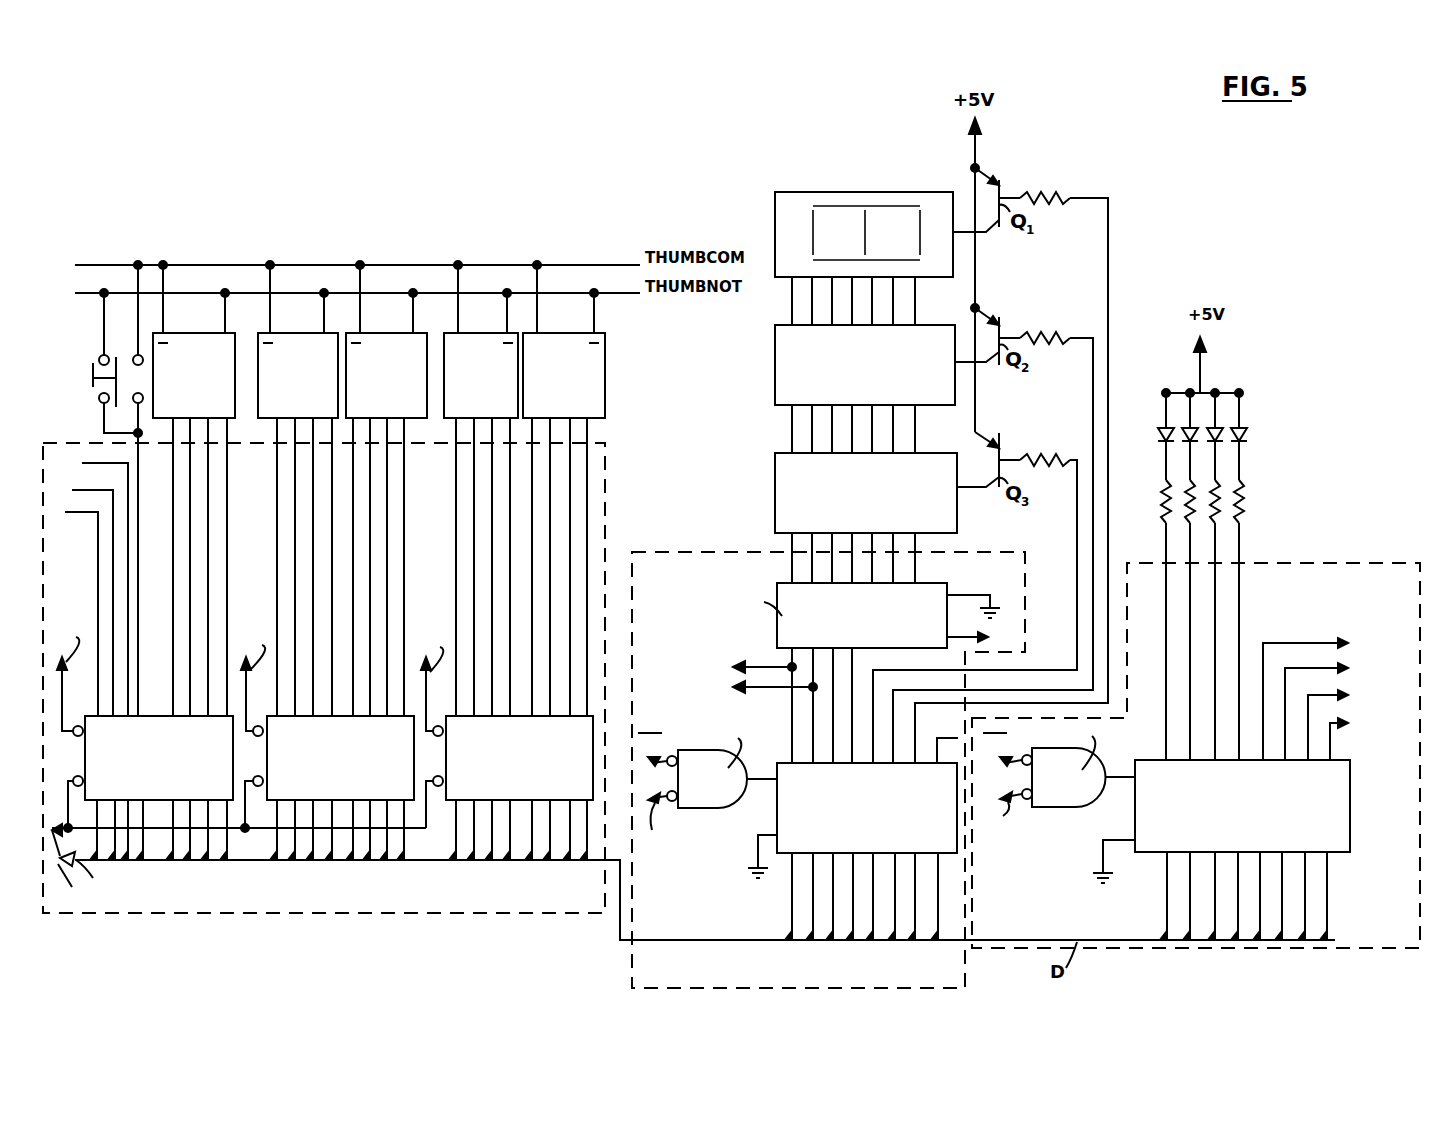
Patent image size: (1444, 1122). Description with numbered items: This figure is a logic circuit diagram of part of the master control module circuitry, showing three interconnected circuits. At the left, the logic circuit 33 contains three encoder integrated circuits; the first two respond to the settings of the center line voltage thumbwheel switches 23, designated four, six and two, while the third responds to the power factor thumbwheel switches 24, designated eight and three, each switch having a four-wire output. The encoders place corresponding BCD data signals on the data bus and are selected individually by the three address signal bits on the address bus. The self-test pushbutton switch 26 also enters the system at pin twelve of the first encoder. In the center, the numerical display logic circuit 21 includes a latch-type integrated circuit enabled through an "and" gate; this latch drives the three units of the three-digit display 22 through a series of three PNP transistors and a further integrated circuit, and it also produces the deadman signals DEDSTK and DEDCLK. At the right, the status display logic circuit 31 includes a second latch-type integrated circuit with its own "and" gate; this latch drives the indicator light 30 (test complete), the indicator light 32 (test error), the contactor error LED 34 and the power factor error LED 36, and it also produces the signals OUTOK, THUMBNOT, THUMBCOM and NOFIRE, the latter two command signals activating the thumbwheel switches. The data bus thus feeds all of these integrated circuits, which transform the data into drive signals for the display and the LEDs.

The numerical display logic circuit 21 is at (829, 770).
The three-digit display 22 is at (765, 168).
The thumbwheel switches 23 is at (420, 250).
The pair of thumbwheel switches 24 is at (612, 250).
The self-test pushbutton switch 26 is at (100, 372).
The indicator light 30 is at (1190, 390).
The status display logic circuit 31 is at (1208, 755).
The indicator light 32 is at (1164, 390).
The logic circuit 33 is at (689, 691).
The LED 34 is at (1216, 390).
The LED 36 is at (1240, 393).